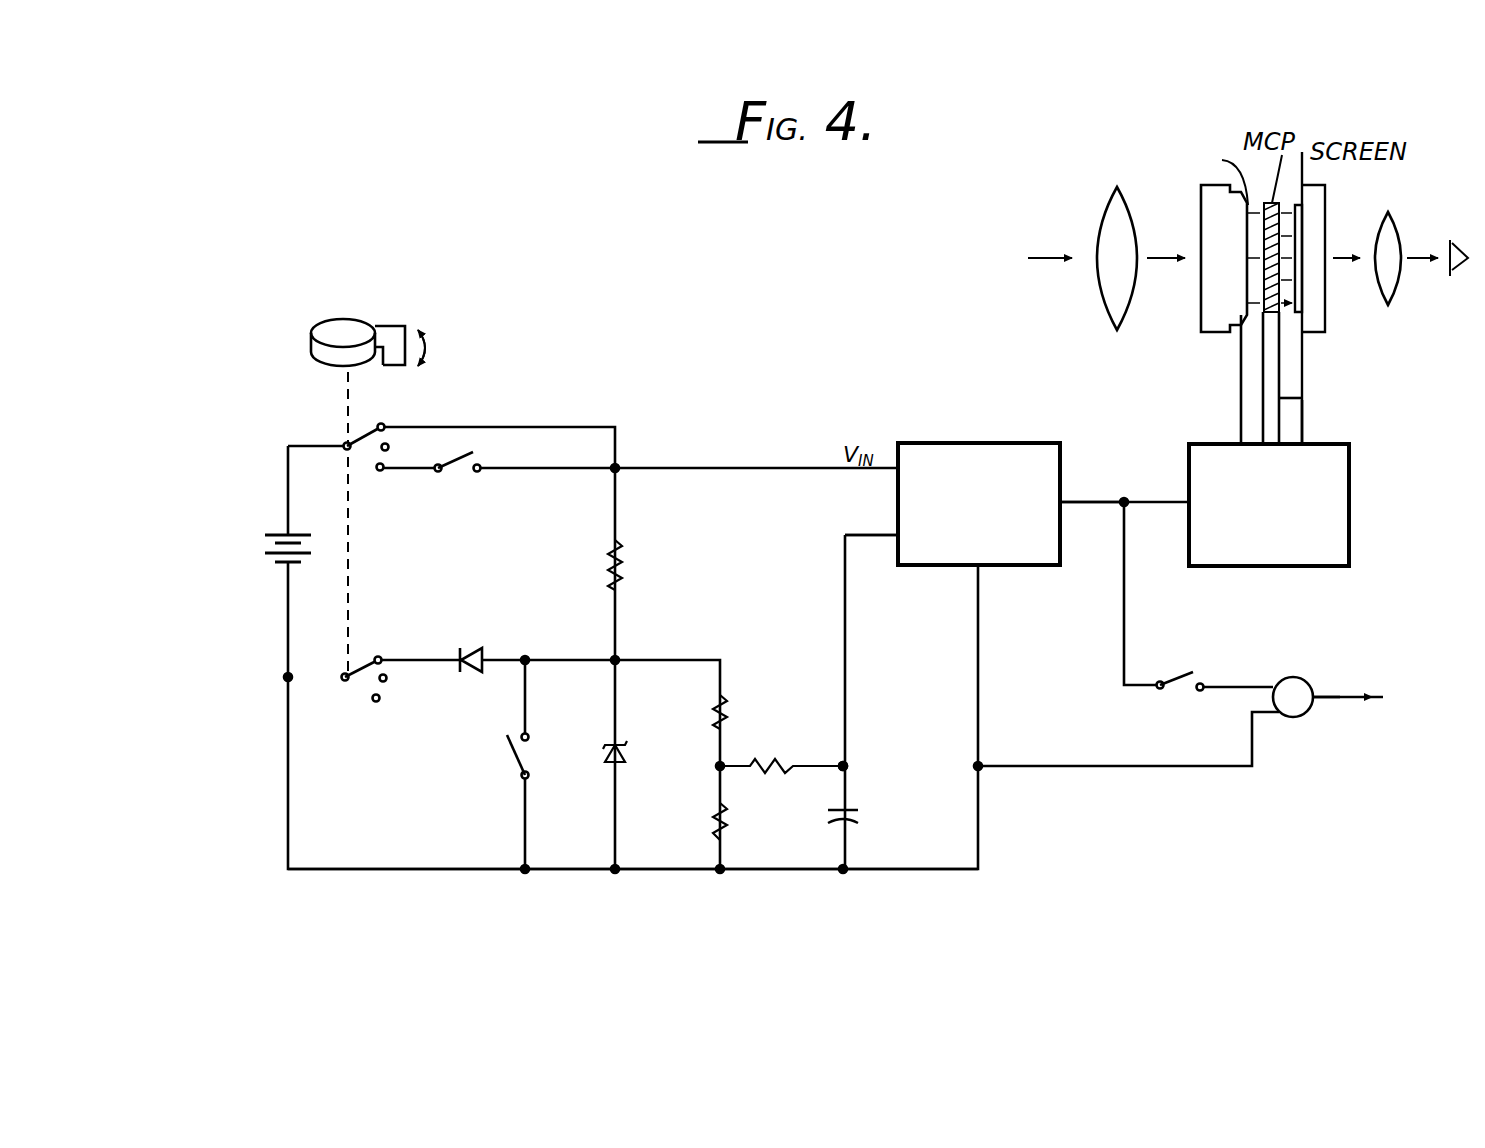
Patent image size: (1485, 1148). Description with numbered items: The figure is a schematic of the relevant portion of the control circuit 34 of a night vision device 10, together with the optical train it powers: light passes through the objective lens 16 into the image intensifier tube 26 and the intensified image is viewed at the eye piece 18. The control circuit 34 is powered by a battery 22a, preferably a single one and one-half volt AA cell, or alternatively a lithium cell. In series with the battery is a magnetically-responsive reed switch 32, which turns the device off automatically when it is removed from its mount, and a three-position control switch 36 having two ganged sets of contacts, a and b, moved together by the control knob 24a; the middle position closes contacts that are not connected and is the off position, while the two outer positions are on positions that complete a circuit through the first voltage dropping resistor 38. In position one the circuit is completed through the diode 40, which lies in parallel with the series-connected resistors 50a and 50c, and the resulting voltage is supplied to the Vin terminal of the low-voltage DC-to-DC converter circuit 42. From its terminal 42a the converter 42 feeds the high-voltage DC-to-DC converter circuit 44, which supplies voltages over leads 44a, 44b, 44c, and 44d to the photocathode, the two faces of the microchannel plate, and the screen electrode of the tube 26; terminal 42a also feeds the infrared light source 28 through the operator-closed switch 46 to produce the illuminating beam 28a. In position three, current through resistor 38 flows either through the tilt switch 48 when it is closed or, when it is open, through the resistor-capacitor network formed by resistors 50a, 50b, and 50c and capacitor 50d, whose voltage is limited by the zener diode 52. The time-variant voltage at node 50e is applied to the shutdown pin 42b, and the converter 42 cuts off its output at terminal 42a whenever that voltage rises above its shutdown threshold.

The image intensifier system 10 is at (1025, 200).
The objective lens 16 is at (1108, 296).
The eye piece 18 is at (1392, 300).
The image intensifier tube 26 is at (1215, 346).
The lead 44a is at (1241, 397).
The lead 44b is at (1263, 373).
The lead 44c is at (1302, 398).
The lead 44d is at (1302, 423).
The high-voltage DC-to-DC voltage converter circuit 44 is at (1352, 478).
The low-voltage DC-to-DC voltage converter circuit 42 is at (960, 443).
The terminal 42a is at (1068, 500).
The shutdown pin 42b is at (896, 533).
The control knob 24a is at (383, 320).
The battery 22a is at (272, 545).
The three-position control switch 36 is at (366, 462).
The magnetically-responsive switch 32 is at (460, 478).
The first voltage dropping resistor 38 is at (622, 560).
The diode 40 is at (472, 648).
The switch 48 is at (504, 765).
The zener diode 52 is at (621, 748).
The resistor 50a is at (728, 705).
The resistor 50b is at (775, 760).
The resistor 50c is at (727, 820).
The capacitor 50d is at (858, 816).
The node 50e is at (848, 765).
The switch 46 is at (1178, 697).
The infrared light source 28 is at (1305, 682).
The beam 28a is at (1338, 702).
The control circuit 34 is at (520, 912).